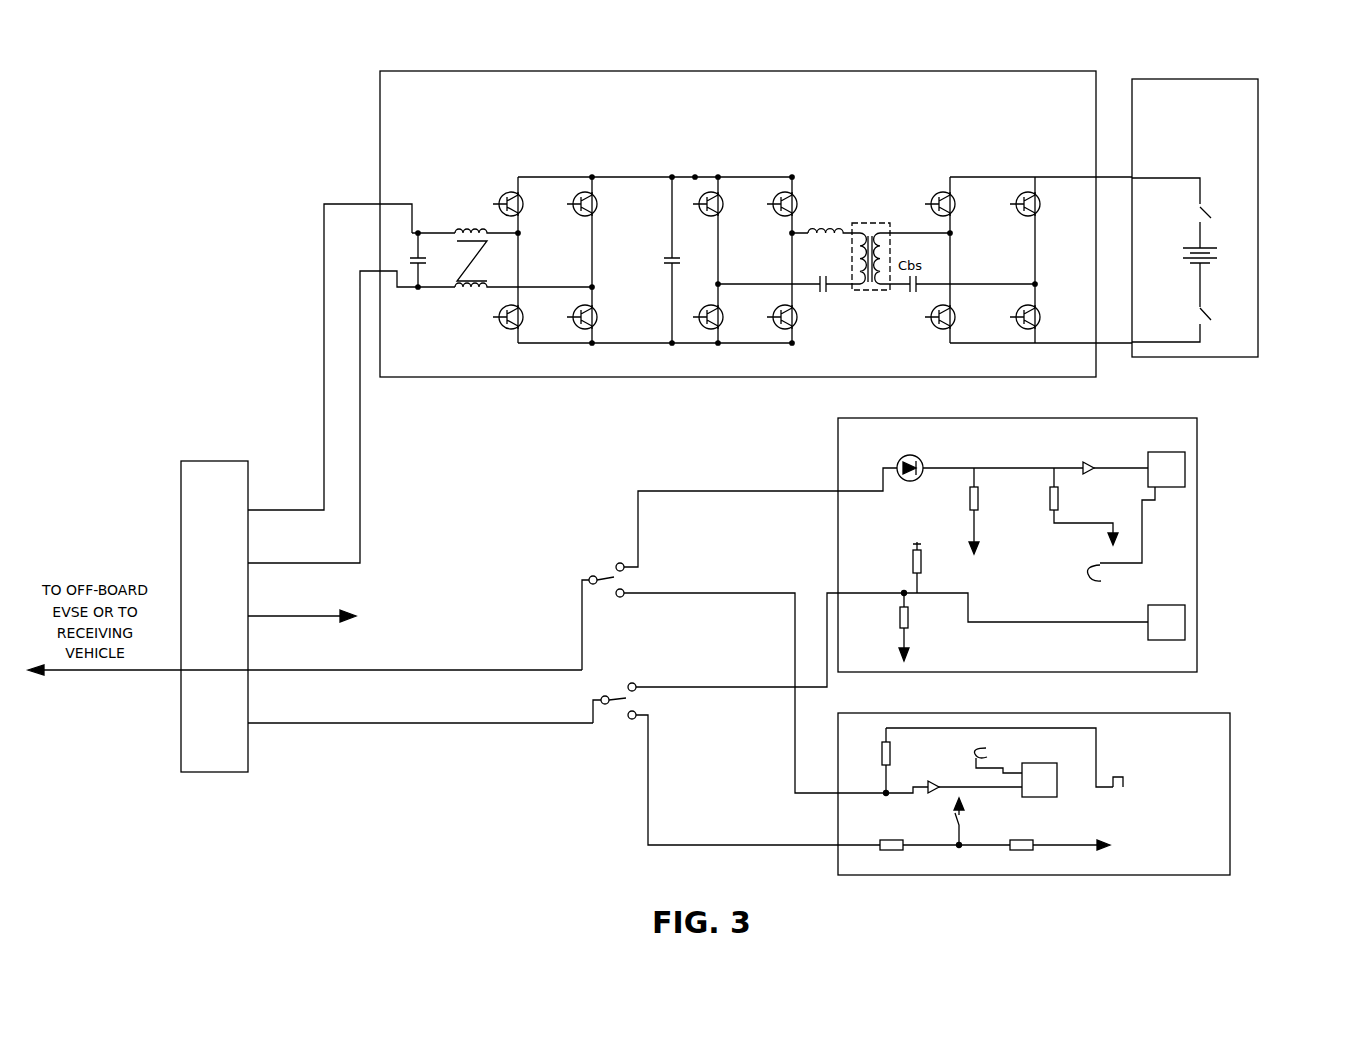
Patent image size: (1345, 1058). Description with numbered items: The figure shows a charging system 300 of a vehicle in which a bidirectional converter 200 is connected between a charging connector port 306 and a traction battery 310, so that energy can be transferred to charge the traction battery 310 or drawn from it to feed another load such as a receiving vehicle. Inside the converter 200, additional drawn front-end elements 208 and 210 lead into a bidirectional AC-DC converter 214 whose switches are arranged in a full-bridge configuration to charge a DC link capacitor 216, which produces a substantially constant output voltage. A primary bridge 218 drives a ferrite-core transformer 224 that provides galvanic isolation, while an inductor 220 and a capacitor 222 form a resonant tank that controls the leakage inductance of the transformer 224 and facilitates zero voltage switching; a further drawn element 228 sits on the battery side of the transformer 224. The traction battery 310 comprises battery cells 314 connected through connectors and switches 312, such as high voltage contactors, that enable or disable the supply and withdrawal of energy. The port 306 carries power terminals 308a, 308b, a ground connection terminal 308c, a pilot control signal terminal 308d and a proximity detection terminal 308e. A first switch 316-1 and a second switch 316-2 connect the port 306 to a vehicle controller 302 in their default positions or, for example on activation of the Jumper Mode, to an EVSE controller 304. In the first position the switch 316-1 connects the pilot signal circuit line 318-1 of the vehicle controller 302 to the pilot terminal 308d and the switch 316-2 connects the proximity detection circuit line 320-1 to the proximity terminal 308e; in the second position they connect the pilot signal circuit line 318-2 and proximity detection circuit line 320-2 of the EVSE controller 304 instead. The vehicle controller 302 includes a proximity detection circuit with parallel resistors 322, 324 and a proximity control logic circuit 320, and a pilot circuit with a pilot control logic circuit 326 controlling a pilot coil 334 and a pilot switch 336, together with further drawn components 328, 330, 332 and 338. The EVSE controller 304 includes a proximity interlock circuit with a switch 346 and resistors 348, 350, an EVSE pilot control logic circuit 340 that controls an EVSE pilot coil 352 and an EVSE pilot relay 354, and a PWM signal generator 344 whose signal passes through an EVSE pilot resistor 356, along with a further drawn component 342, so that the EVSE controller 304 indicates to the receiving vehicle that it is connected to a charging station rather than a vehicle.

The converter 200 is at (645, 70).
The filter inductor 208 is at (475, 231).
The filter capacitor Cf 210 is at (423, 248).
The bidirectional AC-DC converter 214 is at (572, 195).
The DC link capacitor 216 is at (667, 266).
The primary bridge 218 is at (720, 196).
The inductor 220 is at (833, 231).
The capacitor 222 is at (828, 290).
The ferrite-core transformer 224 is at (878, 224).
The third switching bridge Q9-Q12 228 is at (949, 200).
The charging system 300 is at (1322, 76).
The vehicle controller 302 is at (1197, 507).
The EVSE controller 304 is at (1230, 768).
The charging connector port 306 is at (181, 524).
The power terminal 308a is at (312, 508).
The power terminal 308b is at (360, 567).
The ground connection terminal 308c is at (302, 618).
The pilot control signal terminal 308d is at (330, 672).
The proximity detection terminal 308e is at (300, 725).
The traction battery 310 is at (1258, 245).
The connectors and switches 312 is at (1210, 213).
The battery cells 314 is at (1204, 267).
The first switch 316-1 is at (603, 582).
The second switch 316-2 is at (620, 695).
The pilot signal circuit line 318-1 is at (683, 490).
The pilot signal circuit line 318-2 is at (715, 592).
The proximity control logic circuit 320 is at (1185, 622).
The proximity detection circuit line 320-1 is at (735, 690).
The proximity detection circuit line 320-2 is at (725, 845).
The resistor 322 is at (910, 624).
The resistor 324 is at (925, 563).
The pilot control logic circuit 326 is at (1185, 468).
The buffer 328 is at (1087, 460).
The diode 330 is at (902, 457).
The resistor R3 332 is at (982, 505).
The pilot coil 334 is at (1088, 573).
The pilot switch 336 is at (1083, 525).
The resistor R2 338 is at (1060, 497).
The EVSE pilot control logic circuit 340 is at (1058, 794).
The buffer 342 is at (930, 793).
The PWM signal generator 344 is at (1118, 775).
The switch 346 is at (955, 827).
The resistor 348 is at (1023, 852).
The pull-up resistor 350 is at (893, 852).
The EVSE pilot coil 352 is at (975, 753).
The EVSE pilot relay 354 is at (965, 728).
The EVSE pilot resistor 356 is at (885, 767).